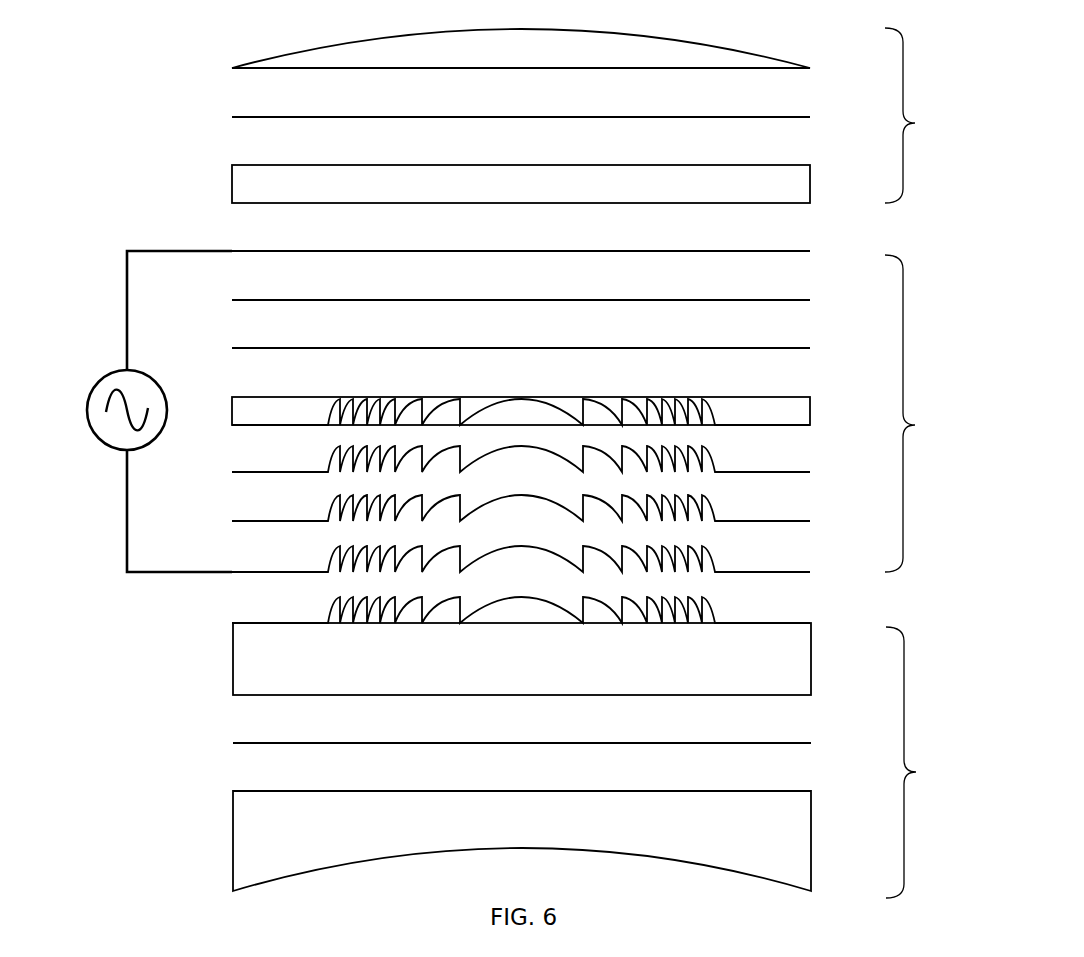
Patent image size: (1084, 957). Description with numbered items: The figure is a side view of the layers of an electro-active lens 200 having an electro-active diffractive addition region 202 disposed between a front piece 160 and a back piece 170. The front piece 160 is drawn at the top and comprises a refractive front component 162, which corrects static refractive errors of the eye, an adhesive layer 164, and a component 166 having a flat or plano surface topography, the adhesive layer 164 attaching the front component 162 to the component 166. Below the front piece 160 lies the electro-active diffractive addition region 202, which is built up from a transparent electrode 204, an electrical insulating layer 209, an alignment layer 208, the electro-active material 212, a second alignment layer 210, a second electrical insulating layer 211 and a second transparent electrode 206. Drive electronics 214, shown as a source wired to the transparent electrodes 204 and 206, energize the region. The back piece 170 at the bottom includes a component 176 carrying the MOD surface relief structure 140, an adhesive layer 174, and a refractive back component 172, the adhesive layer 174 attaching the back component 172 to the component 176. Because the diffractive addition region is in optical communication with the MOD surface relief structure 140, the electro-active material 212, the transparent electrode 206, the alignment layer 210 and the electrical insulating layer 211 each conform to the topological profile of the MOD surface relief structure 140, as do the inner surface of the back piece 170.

The electro-active lens 200 is at (151, 43).
The refractive front component 162 is at (707, 45).
The adhesive layer 164 is at (795, 117).
The component having a flat or plano surface topography 166 is at (793, 190).
The front piece 160 is at (923, 115).
The drive electronics 214 is at (98, 382).
The transparent electrode 204 is at (795, 251).
The electrical insulating layer 209 is at (795, 300).
The alignment layer 208 is at (795, 348).
The electro-active material 212 is at (793, 417).
The alignment layer 210 is at (795, 472).
The electrical insulating layer 211 is at (795, 521).
The transparent electrode 206 is at (795, 572).
The electro-active diffractive addition region 202 is at (924, 413).
The MOD surface relief structure 140 is at (713, 612).
The component having the MOD surface relief structure 176 is at (793, 674).
The adhesive layer 174 is at (795, 743).
The refractive back component 172 is at (811, 848).
The back piece 170 is at (925, 762).